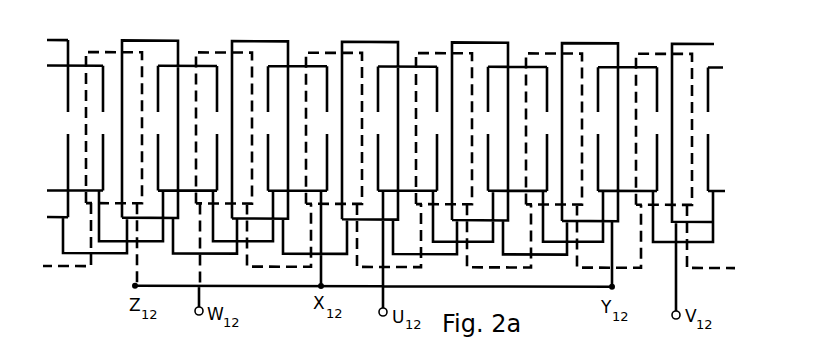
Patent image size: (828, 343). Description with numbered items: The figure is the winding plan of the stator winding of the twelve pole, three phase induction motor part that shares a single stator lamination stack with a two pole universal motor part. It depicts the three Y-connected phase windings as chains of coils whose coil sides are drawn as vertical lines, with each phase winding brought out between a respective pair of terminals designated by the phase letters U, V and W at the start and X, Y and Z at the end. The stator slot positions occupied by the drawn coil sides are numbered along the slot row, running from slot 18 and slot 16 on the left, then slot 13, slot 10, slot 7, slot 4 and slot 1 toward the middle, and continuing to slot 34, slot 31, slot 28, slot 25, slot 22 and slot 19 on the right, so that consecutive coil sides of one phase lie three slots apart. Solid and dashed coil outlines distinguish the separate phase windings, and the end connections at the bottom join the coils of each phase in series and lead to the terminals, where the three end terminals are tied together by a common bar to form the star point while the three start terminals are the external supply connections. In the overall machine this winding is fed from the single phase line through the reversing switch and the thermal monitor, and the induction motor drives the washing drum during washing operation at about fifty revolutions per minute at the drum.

The slot 18 coil side 18 is at (67, 128).
The slot 16 coil side 16 is at (102, 128).
The slot 13 coil side 13 is at (157, 128).
The slot 10 coil side 10 is at (216, 128).
The slot 7 coil side 7 is at (268, 128).
The slot 4 coil side 4 is at (327, 128).
The slot 1 coil side 1 is at (378, 129).
The slot 34 coil side 34 is at (436, 129).
The slot 31 coil side 31 is at (487, 129).
The slot 28 coil side 28 is at (546, 129).
The slot 25 coil side 25 is at (597, 129).
The slot 22 coil side 22 is at (656, 129).
The slot 19 coil side 19 is at (707, 130).